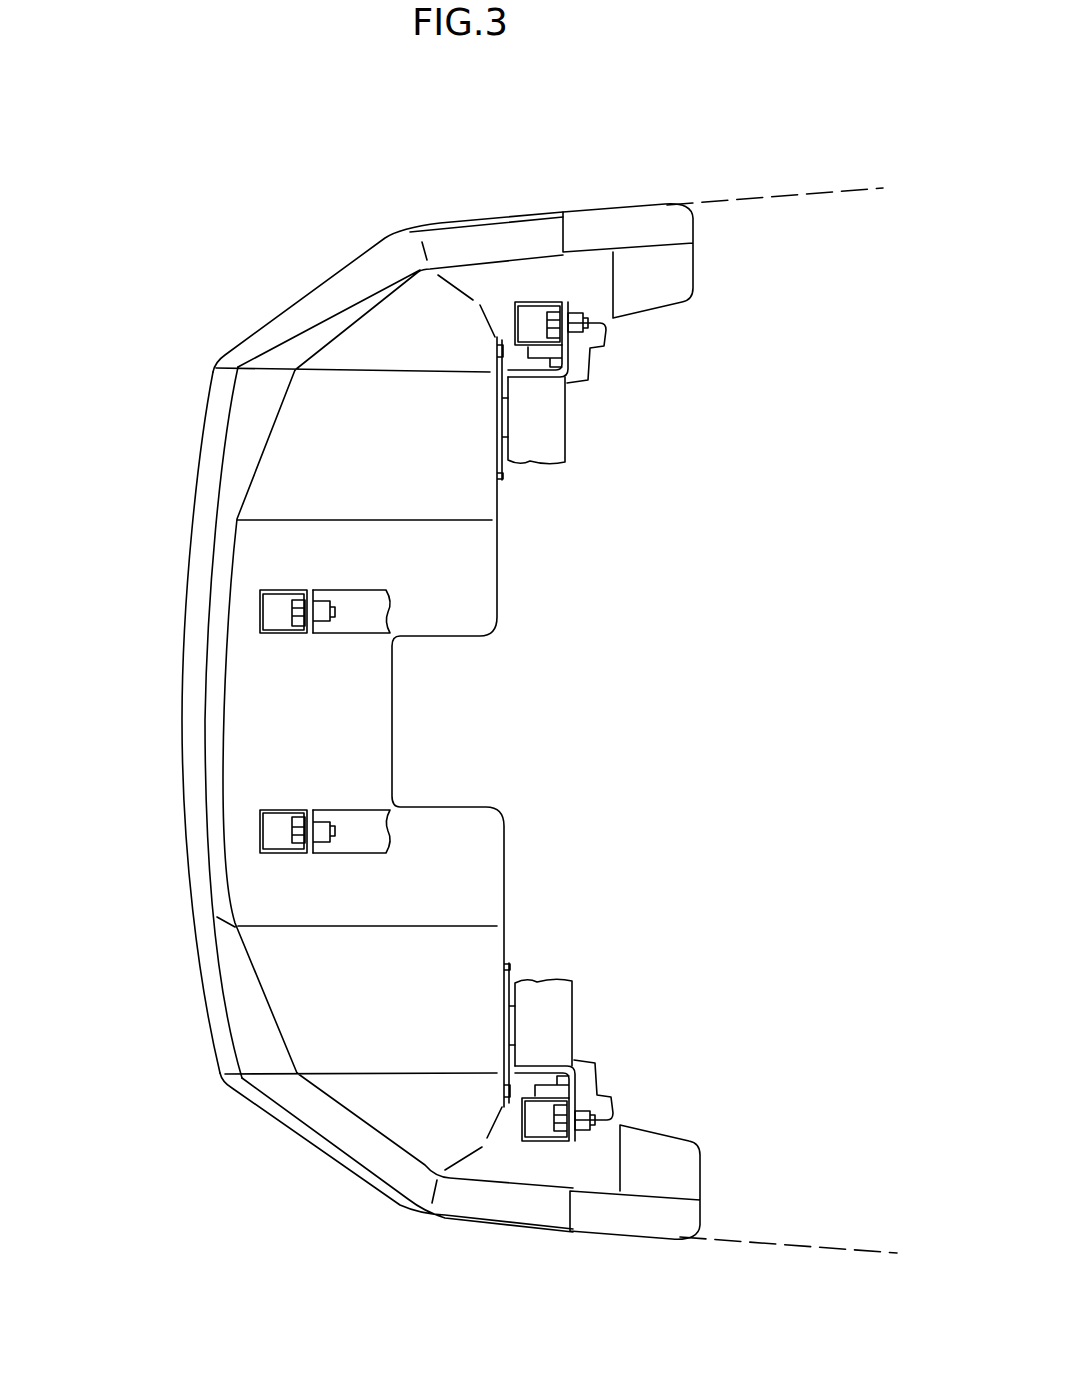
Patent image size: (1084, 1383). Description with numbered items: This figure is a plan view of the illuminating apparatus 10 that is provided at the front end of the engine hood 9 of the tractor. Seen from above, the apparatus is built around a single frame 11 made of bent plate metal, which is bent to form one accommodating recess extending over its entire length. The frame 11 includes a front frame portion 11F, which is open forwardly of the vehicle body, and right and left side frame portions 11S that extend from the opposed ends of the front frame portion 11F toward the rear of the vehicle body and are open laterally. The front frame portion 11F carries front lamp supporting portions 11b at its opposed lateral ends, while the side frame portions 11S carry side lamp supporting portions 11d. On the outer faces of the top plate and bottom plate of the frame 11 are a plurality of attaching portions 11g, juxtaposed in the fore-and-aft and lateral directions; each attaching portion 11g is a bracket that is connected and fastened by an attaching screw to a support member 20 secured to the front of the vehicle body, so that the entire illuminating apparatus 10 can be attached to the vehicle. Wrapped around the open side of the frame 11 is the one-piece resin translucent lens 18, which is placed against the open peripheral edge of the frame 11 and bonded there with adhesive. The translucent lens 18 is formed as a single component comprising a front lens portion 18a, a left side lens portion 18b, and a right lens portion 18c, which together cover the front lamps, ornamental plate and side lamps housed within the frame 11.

The engine hood 9 is at (795, 193).
The illuminating apparatus 10 is at (195, 282).
The frame 11 is at (568, 721).
The side frame portions 11S is at (727, 721).
The front frame portion 11F is at (534, 721).
The front lamp supporting portions 11b is at (498, 538).
The side lamp supporting portions 11d is at (666, 300).
The attaching portions 11g is at (537, 302).
The translucent lens 18 is at (310, 732).
The front lens portion 18a is at (190, 632).
The left side lens portion 18b is at (462, 222).
The right lens portion 18c is at (495, 1225).
The support member 20 is at (556, 432).